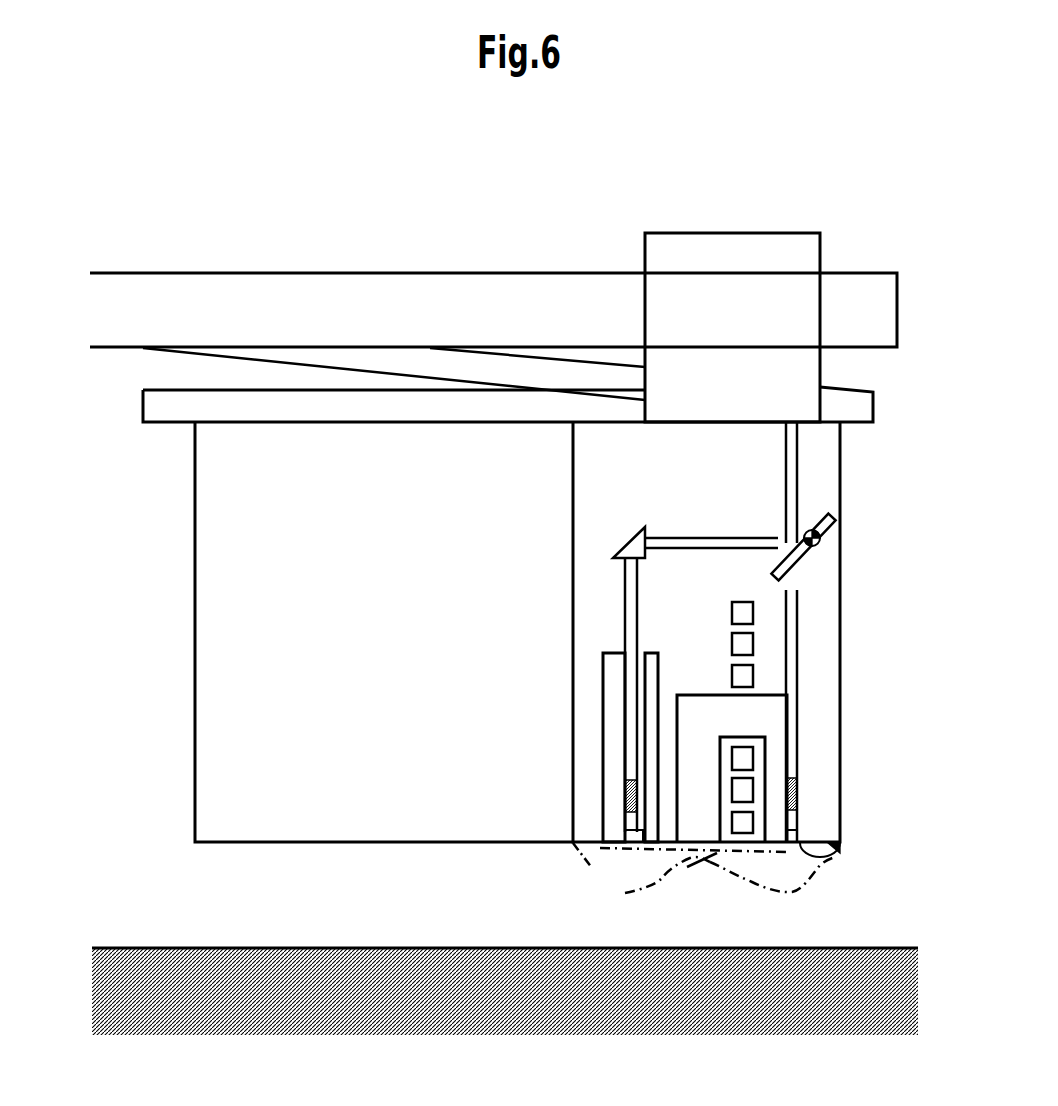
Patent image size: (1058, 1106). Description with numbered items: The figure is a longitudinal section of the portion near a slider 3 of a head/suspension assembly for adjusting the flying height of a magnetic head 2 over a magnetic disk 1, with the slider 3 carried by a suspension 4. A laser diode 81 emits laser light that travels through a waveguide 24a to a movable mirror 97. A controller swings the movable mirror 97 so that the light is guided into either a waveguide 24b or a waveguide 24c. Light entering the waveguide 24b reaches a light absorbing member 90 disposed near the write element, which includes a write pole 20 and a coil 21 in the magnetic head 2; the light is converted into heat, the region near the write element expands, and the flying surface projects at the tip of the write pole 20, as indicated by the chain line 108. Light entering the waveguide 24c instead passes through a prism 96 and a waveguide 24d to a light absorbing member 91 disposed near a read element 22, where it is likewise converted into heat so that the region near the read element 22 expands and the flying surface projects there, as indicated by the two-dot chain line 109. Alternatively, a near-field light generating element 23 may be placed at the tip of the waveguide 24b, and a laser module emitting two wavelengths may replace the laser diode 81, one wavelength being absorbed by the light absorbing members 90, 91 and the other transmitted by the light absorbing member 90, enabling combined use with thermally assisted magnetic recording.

The magnetic disk 1 is at (307, 968).
The magnetic head 2 is at (645, 453).
The slider 3 is at (224, 782).
The suspension 4 is at (198, 296).
The write pole 20 is at (773, 745).
The coil 21 is at (745, 678).
The read element 22 is at (640, 838).
The near-field light generating element 23 is at (840, 845).
The waveguide 24a is at (795, 478).
The waveguide 24b is at (790, 637).
The waveguide 24c is at (667, 547).
The waveguide 24d is at (627, 642).
The laser diode 81 is at (728, 242).
The light absorbing member 90 is at (798, 795).
The light absorbing member 91 is at (638, 797).
The prism 96 is at (630, 545).
The movable mirror 97 is at (800, 552).
The chain line 108 is at (803, 883).
The two-dot chain line 109 is at (675, 868).